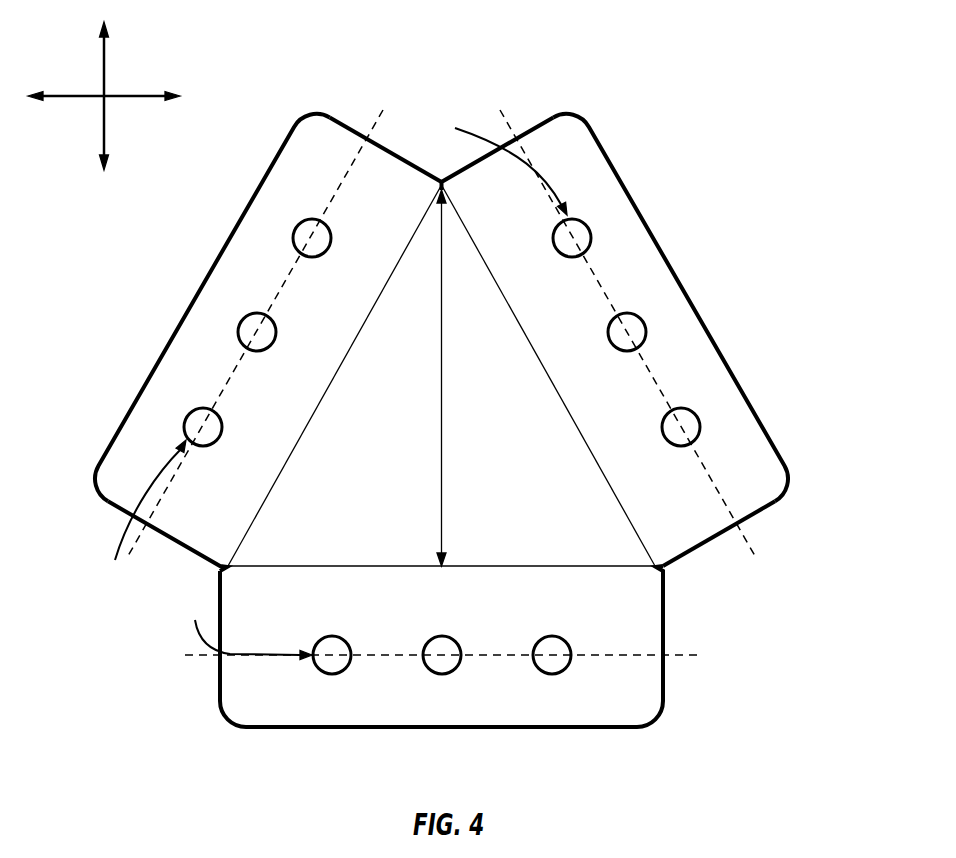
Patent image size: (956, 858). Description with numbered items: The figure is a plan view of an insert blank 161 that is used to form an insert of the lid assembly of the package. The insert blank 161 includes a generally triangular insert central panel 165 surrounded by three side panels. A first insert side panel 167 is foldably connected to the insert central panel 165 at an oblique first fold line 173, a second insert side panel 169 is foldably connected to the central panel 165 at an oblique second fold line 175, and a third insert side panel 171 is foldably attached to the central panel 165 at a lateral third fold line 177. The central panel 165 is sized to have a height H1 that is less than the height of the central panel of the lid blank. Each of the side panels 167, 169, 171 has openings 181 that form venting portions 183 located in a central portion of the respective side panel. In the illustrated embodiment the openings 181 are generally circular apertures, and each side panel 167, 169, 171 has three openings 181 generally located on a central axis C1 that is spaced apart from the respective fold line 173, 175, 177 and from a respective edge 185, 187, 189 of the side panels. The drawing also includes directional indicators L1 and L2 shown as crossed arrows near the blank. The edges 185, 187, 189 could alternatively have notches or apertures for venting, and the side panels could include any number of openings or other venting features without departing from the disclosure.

The insert blank 161 is at (429, 438).
The insert central panel 165 is at (441, 375).
The first insert side panel 167 is at (251, 340).
The second insert side panel 169 is at (620, 338).
The third insert side panel 171 is at (441, 667).
The first fold line 173 is at (296, 442).
The second fold line 175 is at (525, 340).
The third fold line 177 is at (520, 565).
The openings 181 is at (312, 238).
The venting portions 183 is at (327, 381).
The edge of first insert side panel 185 is at (138, 393).
The edge of second insert side panel 187 is at (722, 337).
The edge of third insert side panel 189 is at (456, 707).
The first axis L1 is at (104, 68).
The second axis L2 is at (126, 97).
The central axis C1 is at (381, 117).
The height of the central panel H1 is at (442, 388).